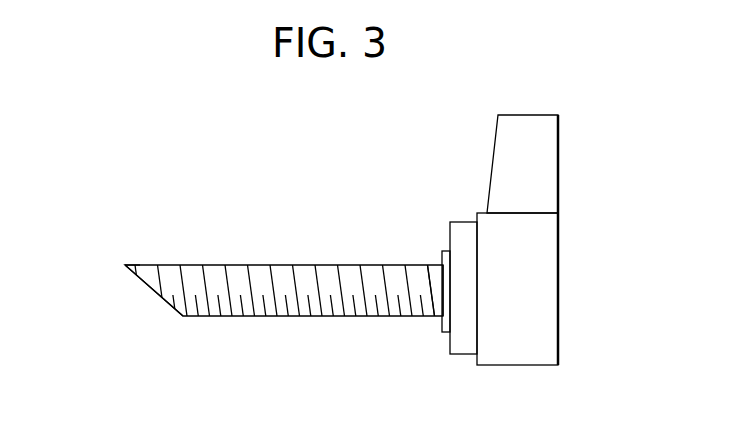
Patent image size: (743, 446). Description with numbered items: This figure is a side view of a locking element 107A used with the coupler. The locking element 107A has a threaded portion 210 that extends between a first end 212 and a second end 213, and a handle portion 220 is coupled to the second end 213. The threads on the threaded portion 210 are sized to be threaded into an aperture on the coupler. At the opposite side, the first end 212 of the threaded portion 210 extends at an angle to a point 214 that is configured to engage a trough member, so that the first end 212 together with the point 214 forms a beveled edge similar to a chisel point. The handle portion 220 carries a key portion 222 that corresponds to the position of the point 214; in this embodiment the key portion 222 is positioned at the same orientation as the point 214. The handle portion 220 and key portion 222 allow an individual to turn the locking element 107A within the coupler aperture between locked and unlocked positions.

The locking element 107A is at (192, 148).
The threaded portion 210 is at (282, 264).
The first end 212 is at (152, 292).
The second end 213 is at (422, 317).
The point 214 is at (125, 265).
The handle portion 220 is at (557, 297).
The key portion 222 is at (548, 162).